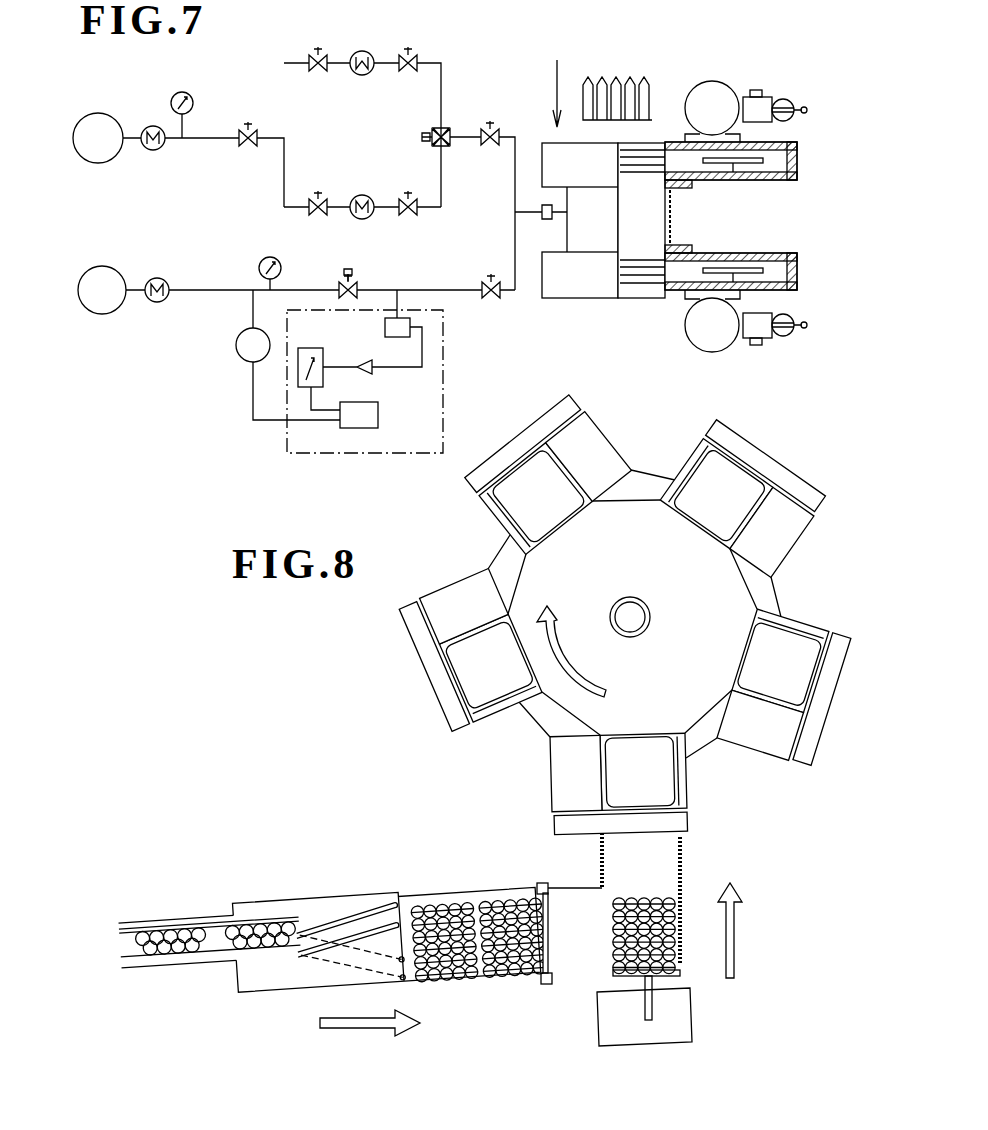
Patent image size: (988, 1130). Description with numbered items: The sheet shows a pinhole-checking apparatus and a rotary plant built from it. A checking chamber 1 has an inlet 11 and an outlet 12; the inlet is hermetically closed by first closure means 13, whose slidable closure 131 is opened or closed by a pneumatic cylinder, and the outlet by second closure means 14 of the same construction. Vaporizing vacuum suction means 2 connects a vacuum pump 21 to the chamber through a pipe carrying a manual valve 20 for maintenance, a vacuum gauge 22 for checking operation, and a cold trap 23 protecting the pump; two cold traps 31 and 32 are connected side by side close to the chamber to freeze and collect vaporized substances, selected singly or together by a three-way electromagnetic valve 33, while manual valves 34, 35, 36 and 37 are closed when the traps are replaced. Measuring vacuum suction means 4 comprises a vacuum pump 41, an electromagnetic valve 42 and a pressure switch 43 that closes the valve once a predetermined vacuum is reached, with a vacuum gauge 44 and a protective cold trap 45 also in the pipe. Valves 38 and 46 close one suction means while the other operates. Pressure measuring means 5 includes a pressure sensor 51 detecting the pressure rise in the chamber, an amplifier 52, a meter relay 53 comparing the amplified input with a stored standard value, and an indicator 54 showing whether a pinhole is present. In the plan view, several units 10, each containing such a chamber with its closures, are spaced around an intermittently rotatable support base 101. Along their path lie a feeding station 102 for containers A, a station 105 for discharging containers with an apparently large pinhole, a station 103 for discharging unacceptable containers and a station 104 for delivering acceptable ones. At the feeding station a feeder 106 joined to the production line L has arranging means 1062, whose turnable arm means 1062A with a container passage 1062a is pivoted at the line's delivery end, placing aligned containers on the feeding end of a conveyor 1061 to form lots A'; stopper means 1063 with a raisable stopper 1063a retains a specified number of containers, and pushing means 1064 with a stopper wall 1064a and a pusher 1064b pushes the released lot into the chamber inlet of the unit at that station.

In FIG. 7, the checking chamber 1 is at (655, 215).
In FIG. 8, the checking chamber 1 is at (760, 705).
In FIG. 7, the vaporizing vacuum suction means 2 is at (148, 198).
In FIG. 7, the measuring vacuum suction means 4 is at (146, 352).
In FIG. 7, the pressure measuring means 5 is at (443, 445).
In FIG. 8, the unit 10 is at (485, 760).
In FIG. 7, the inlet 11 is at (760, 60).
In FIG. 7, the outlet 12 is at (630, 290).
In FIG. 7, the first closure means 13 is at (758, 104).
In FIG. 7, the second closure means 14 is at (720, 350).
In FIG. 7, the closure 131 is at (745, 170).
In FIG. 7, the manual valve 20 is at (248, 122).
In FIG. 7, the vacuum pump 21 is at (100, 163).
In FIG. 7, the vacuum gauge 22 is at (186, 92).
In FIG. 7, the cold trap 23 is at (150, 124).
In FIG. 7, the cold trap 31 is at (356, 75).
In FIG. 7, the cold trap 32 is at (358, 194).
In FIG. 7, the three-way electromagnetic valve 33 is at (422, 137).
In FIG. 7, the manual valve 34 is at (318, 47).
In FIG. 7, the manual valve 35 is at (408, 47).
In FIG. 7, the manual valve 36 is at (318, 218).
In FIG. 7, the manual valve 37 is at (408, 220).
In FIG. 7, the valve 38 is at (490, 121).
In FIG. 7, the vacuum pump 41 is at (97, 313).
In FIG. 7, the electromagnetic valve 42 is at (352, 268).
In FIG. 7, the pressure switch 43 is at (240, 357).
In FIG. 7, the vacuum gauge 44 is at (258, 268).
In FIG. 7, the cold trap 45 is at (163, 278).
In FIG. 7, the valve 46 is at (491, 274).
In FIG. 7, the pressure sensor 51 is at (385, 325).
In FIG. 7, the amplifier 52 is at (368, 372).
In FIG. 7, the meter relay 53 is at (318, 336).
In FIG. 7, the indicator 54 is at (378, 420).
In FIG. 8, the support base 101 is at (727, 600).
In FIG. 8, the feeding station 102 is at (688, 782).
In FIG. 8, the discharging station 103 is at (560, 398).
In FIG. 8, the delivering station 104 is at (760, 438).
In FIG. 8, the discharging station 105 is at (428, 675).
In FIG. 8, the feeder 106 is at (459, 954).
In FIG. 8, the conveyor 1061 is at (455, 1000).
In FIG. 8, the arranging means 1062 is at (380, 908).
In FIG. 8, the container passage 1062a is at (340, 935).
In FIG. 8, the turnable arm means 1062A is at (365, 962).
In FIG. 8, the stopper means 1063 is at (556, 900).
In FIG. 8, the stopper 1063a is at (560, 985).
In FIG. 8, the pushing means 1064 is at (652, 1012).
In FIG. 8, the stopper wall 1064a is at (685, 845).
In FIG. 8, the pusher 1064b is at (655, 1047).
In FIG. 7, the container A is at (621, 80).
In FIG. 8, the container A is at (213, 907).
In FIG. 8, the lot A' is at (587, 896).
In FIG. 8, the production line L is at (205, 962).